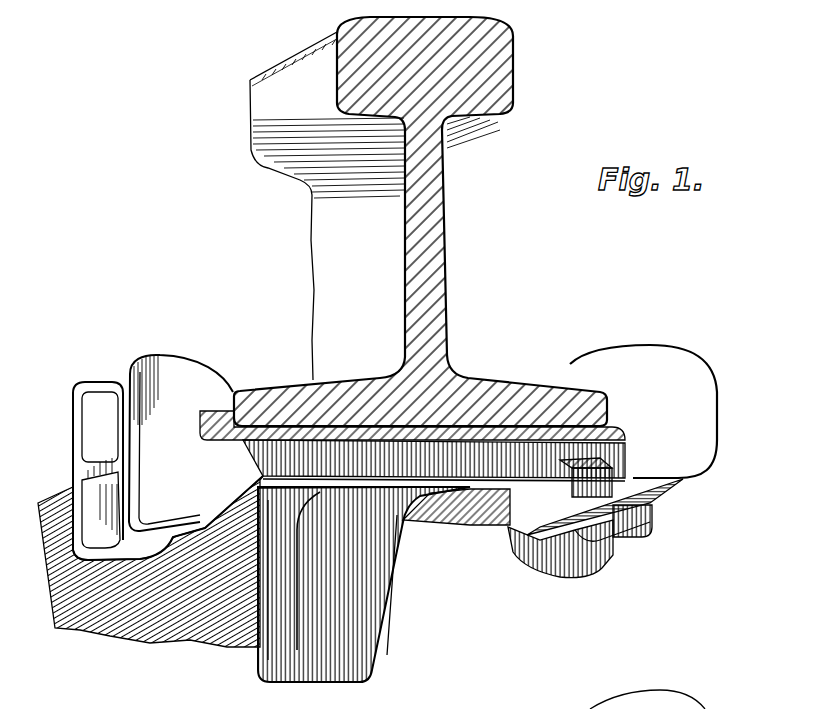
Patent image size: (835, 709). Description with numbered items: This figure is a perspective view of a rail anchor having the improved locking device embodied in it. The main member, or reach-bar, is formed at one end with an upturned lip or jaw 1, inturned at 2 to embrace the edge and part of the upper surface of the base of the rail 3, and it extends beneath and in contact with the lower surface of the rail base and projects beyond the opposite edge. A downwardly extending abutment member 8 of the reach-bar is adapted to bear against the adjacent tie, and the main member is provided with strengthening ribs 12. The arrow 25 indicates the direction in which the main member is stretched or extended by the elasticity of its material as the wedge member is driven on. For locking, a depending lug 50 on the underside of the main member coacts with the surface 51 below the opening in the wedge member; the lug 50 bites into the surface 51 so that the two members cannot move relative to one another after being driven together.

The upturned lip or jaw 1 is at (145, 428).
The inturned portion of jaw 2 is at (220, 388).
The rail 3 is at (432, 246).
The downwardly extending abutment member 8 is at (384, 584).
The strengthening ribs 12 is at (331, 543).
The arrow indicating direction of stretching 25 is at (527, 466).
The depending lug 50 is at (572, 390).
The surface below the opening in the wedge member 51 is at (652, 498).